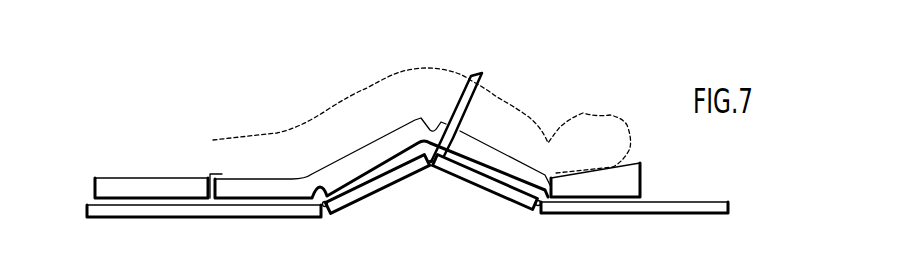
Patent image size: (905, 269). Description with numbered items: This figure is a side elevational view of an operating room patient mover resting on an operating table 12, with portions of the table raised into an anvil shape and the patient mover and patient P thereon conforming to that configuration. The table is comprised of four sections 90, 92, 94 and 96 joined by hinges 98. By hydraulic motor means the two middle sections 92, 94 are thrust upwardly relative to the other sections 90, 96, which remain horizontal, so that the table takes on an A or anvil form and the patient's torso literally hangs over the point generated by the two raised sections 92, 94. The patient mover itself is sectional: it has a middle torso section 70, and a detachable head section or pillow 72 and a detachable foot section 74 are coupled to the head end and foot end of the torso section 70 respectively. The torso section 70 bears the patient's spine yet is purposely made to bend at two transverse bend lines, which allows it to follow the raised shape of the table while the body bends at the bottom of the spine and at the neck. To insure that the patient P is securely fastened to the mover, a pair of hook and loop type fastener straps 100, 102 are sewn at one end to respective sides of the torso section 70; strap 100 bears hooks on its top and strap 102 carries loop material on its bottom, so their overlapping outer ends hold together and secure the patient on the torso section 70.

The operating table 12 is at (733, 207).
The middle torso section 70 is at (290, 190).
The pillow 72 is at (627, 183).
The foot section 74 is at (128, 186).
The table section 90 is at (176, 210).
The table section 92 is at (382, 178).
The table section 94 is at (500, 192).
The table section 96 is at (647, 205).
The hinges 98 is at (323, 207).
The fastener strap 100 is at (484, 97).
The fastener strap 102 is at (502, 54).
The patient P is at (537, 118).